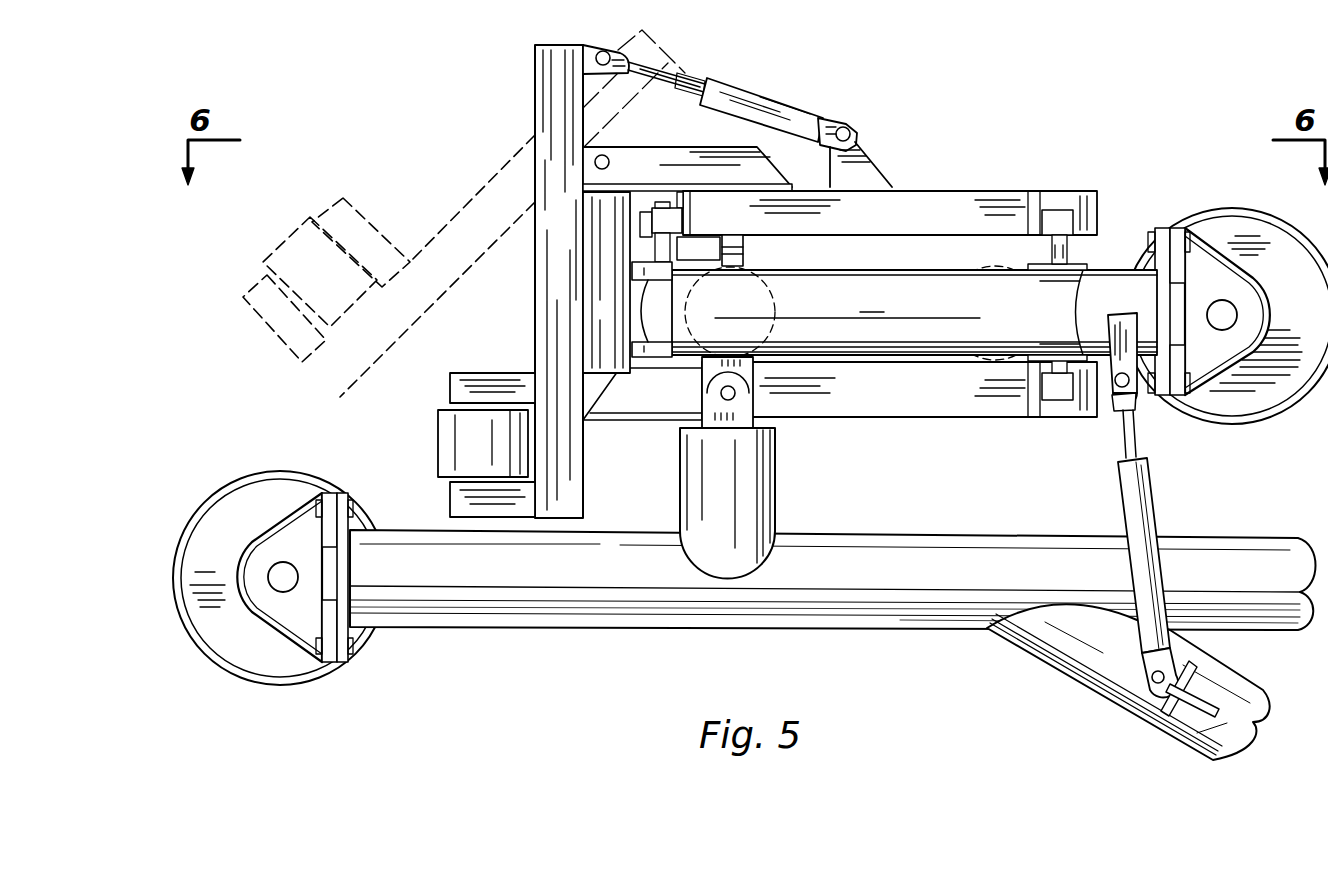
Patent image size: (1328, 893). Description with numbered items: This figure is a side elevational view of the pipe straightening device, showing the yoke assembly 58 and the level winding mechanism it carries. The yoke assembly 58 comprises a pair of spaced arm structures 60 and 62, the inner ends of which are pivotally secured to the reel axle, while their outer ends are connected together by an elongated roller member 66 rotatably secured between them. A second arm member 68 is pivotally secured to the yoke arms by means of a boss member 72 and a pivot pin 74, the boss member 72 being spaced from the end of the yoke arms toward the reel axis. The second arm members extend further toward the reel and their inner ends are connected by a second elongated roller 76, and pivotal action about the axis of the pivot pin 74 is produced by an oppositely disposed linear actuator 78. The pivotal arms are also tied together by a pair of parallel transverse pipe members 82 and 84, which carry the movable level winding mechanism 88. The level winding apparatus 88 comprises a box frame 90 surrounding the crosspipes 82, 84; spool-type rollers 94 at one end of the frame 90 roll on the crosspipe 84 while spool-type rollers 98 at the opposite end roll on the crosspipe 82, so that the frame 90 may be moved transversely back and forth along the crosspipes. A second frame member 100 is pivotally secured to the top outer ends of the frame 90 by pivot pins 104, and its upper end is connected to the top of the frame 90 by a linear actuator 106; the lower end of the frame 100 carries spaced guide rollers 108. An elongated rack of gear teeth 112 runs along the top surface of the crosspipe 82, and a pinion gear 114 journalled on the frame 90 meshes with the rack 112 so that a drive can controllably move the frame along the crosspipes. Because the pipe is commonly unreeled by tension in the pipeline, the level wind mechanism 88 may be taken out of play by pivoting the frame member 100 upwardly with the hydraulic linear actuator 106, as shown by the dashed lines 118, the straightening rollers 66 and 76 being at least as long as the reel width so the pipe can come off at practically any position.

The yoke assembly 58 is at (763, 654).
The arm structure 60 is at (1090, 680).
The arm structure 62 is at (597, 624).
The elongated roller member 66 is at (305, 472).
The second arm member 68 is at (914, 312).
The boss member 72 is at (757, 485).
The pivot pin 74 is at (738, 393).
The second elongated roller 76 is at (1226, 212).
The linear actuator 78 is at (1130, 493).
The transverse pipe member 82 is at (776, 296).
The transverse pipe member 84 is at (950, 322).
The level winding mechanism 88 is at (840, 98).
The box frame 90 is at (983, 195).
The spool-type roller 94 is at (1077, 303).
The spool-type roller 98 is at (635, 309).
The second frame member 100 is at (542, 112).
The pivot pin 104 is at (609, 157).
The linear actuator 106 is at (783, 108).
The guide roller 108 is at (450, 443).
The rack of gear teeth 112 is at (745, 251).
The pinion gear 114 is at (768, 239).
The dashed lines 118 is at (452, 216).